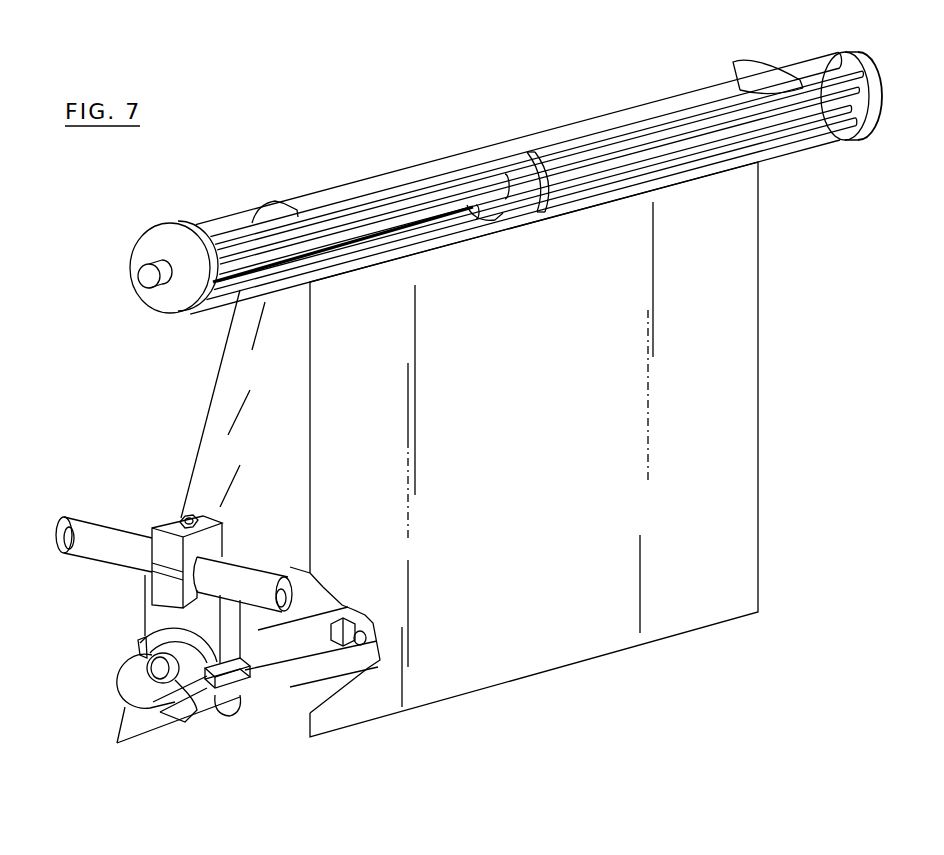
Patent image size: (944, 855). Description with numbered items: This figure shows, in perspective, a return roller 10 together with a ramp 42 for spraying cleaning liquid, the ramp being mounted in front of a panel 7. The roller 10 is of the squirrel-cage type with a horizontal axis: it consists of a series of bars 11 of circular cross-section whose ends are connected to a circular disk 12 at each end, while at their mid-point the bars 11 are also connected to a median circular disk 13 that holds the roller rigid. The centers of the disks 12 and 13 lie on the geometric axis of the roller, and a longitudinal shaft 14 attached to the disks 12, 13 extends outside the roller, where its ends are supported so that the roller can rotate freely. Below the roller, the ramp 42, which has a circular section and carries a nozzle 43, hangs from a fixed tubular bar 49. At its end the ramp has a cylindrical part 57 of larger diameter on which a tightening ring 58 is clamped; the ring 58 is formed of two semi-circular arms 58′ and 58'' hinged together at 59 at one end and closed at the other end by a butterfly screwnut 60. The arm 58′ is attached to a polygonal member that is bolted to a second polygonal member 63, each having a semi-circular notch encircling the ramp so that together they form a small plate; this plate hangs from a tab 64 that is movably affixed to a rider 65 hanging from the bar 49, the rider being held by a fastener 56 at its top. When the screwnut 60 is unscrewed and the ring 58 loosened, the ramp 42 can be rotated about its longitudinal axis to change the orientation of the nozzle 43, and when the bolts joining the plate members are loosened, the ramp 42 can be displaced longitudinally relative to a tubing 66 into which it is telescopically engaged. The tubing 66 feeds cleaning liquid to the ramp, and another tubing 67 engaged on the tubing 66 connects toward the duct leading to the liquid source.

The panel 7 is at (748, 311).
The roller 10 is at (171, 230).
The bars 11 is at (758, 65).
The circular disk 12 is at (160, 300).
The median circular disk 13 is at (544, 165).
The longitudinal shaft 14 is at (157, 264).
The ramp 42 is at (247, 683).
The nozzle 43 is at (366, 640).
The fixed bar 49 is at (243, 573).
The bolt 56 is at (182, 518).
The cylindrical part 57 is at (187, 683).
The tightening ring 58 is at (312, 649).
The semi-circular arm 58' is at (330, 549).
The semi-circular arm 58'' is at (197, 726).
The hinge 59 is at (147, 656).
The butterfly screwnut 60 is at (238, 716).
The second polygonal member 63 is at (155, 613).
The tab 64 is at (160, 588).
The rider 65 is at (160, 547).
The tubing 66 is at (148, 631).
The tubing 67 is at (181, 710).